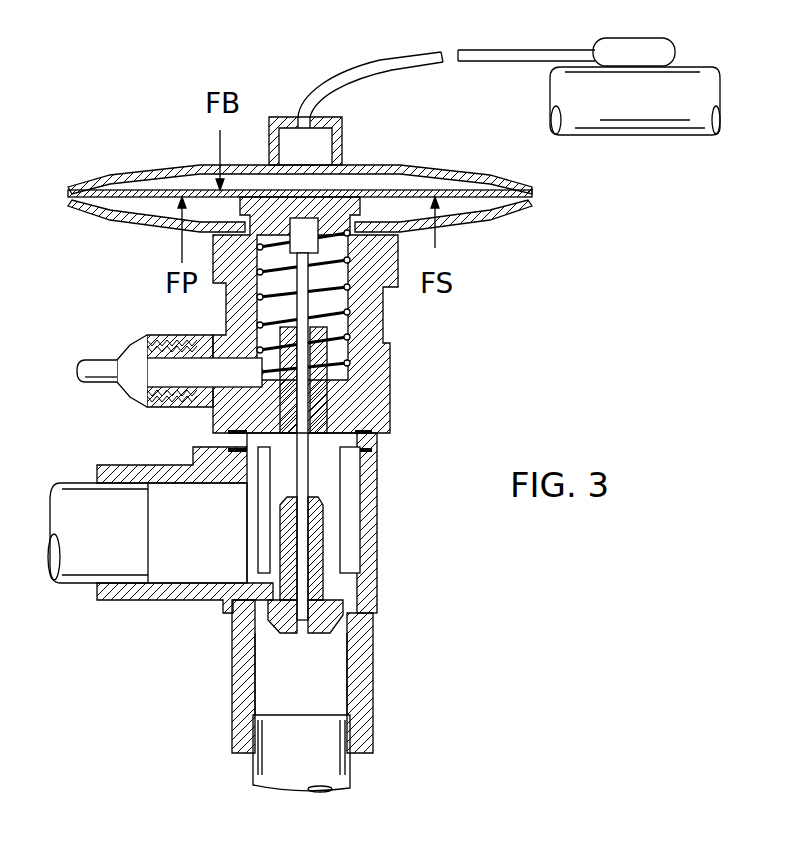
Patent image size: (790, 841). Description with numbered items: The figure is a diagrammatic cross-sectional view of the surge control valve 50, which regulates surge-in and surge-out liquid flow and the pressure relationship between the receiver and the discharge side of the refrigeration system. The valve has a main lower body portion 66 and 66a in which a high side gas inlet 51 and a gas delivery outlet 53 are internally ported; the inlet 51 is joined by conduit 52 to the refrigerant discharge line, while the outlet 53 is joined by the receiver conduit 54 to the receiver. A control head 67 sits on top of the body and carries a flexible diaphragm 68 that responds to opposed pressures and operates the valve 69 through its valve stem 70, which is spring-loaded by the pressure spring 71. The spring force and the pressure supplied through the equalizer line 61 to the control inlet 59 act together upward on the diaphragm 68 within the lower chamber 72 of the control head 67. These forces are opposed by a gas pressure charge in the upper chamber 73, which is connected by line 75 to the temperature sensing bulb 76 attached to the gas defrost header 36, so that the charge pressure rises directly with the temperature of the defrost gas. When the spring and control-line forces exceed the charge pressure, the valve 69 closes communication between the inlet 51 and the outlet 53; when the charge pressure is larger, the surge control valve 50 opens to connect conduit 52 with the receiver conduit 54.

The defrost header 36 is at (668, 112).
The surge control valve 50 is at (448, 415).
The high side gas inlet 51 is at (163, 497).
The conduit 52 is at (58, 500).
The gas delivery outlet 53 is at (335, 680).
The receiver conduit 54 is at (332, 770).
The control inlet 59 is at (165, 365).
The equalizer line 61 is at (88, 362).
The main lower body portion 66 is at (378, 574).
The main body portion 66a is at (392, 376).
The control head 67 is at (275, 199).
The flexible diaphragm 68 is at (432, 177).
The valve 69 is at (327, 622).
The valve stem 70 is at (307, 468).
The pressure spring 71 is at (343, 313).
The lower chamber 72 is at (133, 204).
The upper chamber 73 is at (363, 186).
The line 75 is at (412, 68).
The temperature sensing bulb 76 is at (666, 40).